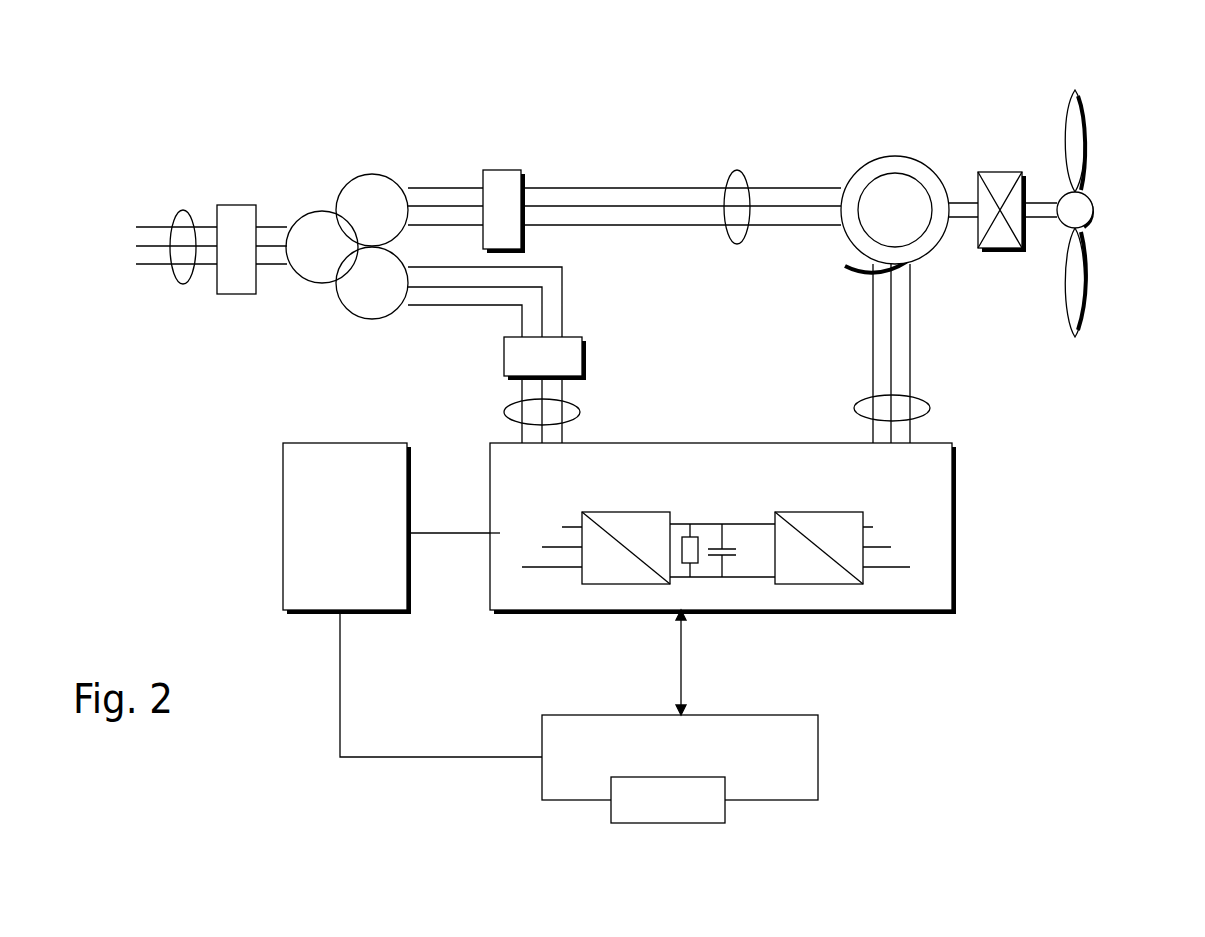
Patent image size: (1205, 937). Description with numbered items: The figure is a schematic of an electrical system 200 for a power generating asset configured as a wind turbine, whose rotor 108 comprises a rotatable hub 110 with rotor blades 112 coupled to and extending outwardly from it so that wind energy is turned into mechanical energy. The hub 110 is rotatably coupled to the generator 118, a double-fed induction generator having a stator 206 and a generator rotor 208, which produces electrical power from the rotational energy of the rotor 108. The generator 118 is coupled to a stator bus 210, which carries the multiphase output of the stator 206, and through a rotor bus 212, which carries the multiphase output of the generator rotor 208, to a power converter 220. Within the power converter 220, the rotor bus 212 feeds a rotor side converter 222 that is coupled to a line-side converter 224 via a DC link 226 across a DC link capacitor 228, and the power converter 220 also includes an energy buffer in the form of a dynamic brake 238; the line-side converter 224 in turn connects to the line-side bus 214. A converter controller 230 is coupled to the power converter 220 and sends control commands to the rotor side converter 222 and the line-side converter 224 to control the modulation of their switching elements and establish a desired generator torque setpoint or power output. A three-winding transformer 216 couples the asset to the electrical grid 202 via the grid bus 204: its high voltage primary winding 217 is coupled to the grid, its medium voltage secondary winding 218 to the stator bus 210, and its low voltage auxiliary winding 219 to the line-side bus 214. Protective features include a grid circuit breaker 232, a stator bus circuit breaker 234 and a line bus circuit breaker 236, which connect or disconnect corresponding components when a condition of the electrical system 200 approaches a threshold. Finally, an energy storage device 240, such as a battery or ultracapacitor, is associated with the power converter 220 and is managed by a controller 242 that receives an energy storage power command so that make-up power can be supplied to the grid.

The electrical system 200 is at (638, 50).
The electrical grid 202 is at (143, 246).
The grid bus 204 is at (186, 212).
The grid circuit breaker 232 is at (236, 205).
The transformer 216 is at (345, 233).
The primary winding 217 is at (308, 287).
The secondary winding 218 is at (372, 174).
The auxiliary winding 219 is at (372, 319).
The stator bus circuit breaker 234 is at (501, 170).
The stator bus 210 is at (737, 170).
The generator 118 is at (913, 191).
The stator 206 is at (928, 172).
The generator rotor 208 is at (925, 245).
The rotor 108 is at (1114, 197).
The hub 110 is at (1095, 213).
The rotor blade 112 is at (1088, 150).
The line bus circuit breaker 236 is at (504, 357).
The line-side bus 214 is at (504, 413).
The rotor bus 212 is at (930, 408).
The power converter 220 is at (750, 551).
The line-side converter 224 is at (607, 584).
The rotor side converter 222 is at (840, 584).
The DC link 226 is at (720, 510).
The dynamic brake 238 is at (693, 584).
The DC link capacitor 228 is at (728, 578).
The converter controller 230 is at (290, 508).
The energy storage device 240 is at (818, 748).
The controller 242 is at (611, 815).